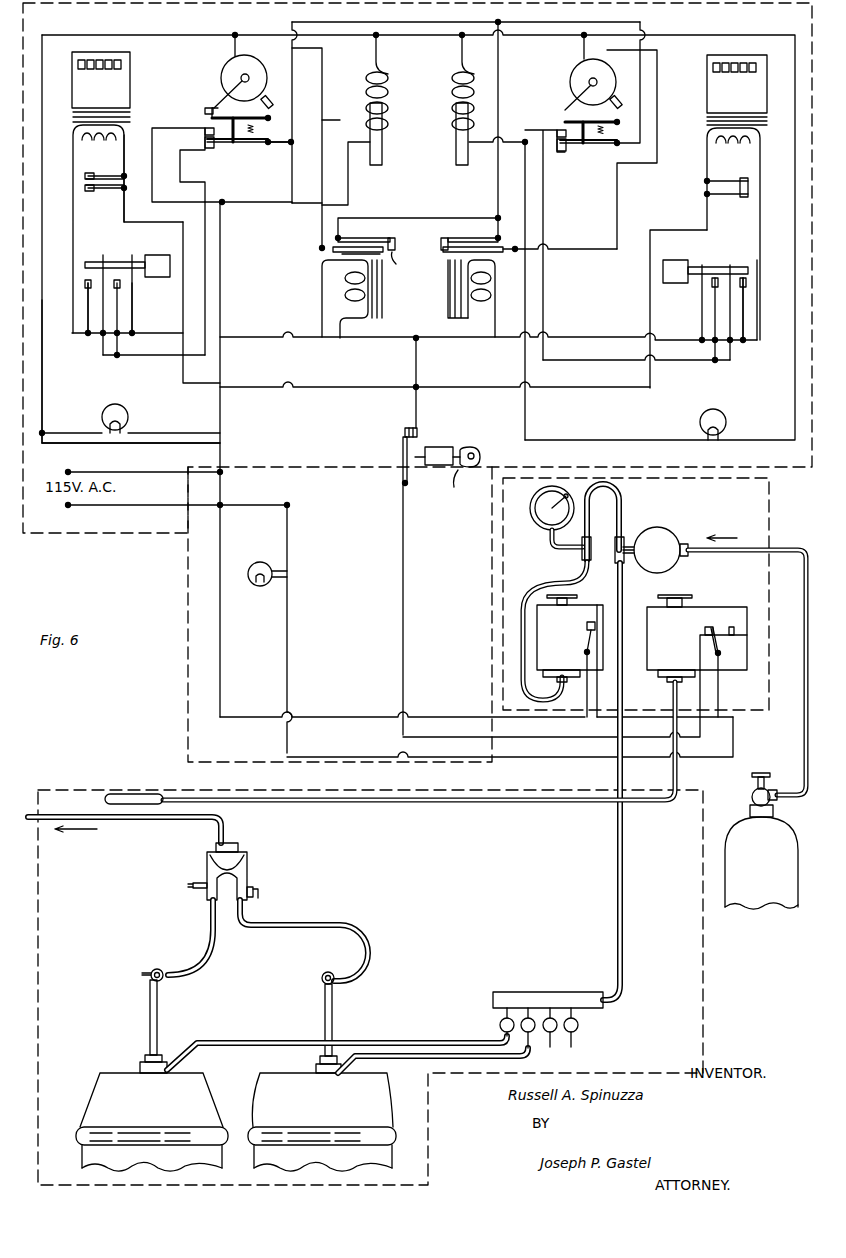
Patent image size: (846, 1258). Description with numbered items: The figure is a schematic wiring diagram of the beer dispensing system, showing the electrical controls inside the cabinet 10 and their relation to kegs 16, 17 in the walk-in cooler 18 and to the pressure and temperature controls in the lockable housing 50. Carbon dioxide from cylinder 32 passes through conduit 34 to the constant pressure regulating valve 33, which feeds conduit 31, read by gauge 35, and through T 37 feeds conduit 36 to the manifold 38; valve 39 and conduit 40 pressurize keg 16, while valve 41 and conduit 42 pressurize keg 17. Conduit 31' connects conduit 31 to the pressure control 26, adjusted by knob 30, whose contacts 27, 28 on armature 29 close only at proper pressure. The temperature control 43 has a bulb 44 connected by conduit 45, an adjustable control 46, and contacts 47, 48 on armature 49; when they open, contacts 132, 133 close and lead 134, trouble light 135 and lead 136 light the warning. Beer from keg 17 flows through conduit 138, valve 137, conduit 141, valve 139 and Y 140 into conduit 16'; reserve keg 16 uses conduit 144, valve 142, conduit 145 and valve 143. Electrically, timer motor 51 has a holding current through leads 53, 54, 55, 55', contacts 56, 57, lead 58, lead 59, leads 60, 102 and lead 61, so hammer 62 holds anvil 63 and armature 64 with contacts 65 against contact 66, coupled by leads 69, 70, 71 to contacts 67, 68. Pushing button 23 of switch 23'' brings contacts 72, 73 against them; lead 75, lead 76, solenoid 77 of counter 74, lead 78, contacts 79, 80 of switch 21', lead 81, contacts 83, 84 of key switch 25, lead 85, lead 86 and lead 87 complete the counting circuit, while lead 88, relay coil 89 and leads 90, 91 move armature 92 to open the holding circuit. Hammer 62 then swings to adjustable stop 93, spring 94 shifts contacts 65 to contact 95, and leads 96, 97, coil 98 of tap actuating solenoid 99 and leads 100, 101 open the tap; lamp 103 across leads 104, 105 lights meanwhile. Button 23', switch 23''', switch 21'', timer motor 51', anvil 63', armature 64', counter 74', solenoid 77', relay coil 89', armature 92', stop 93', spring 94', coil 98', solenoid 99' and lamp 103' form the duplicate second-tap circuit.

The cabinet 10 is at (100, 537).
The beer keg 16 is at (135, 1117).
The conduit 16' is at (124, 835).
The beer keg 17 is at (256, 1076).
The walk-in cooler 18 is at (714, 978).
The switch 21' is at (105, 202).
The switch 21'' is at (727, 200).
The actuating button 23 is at (150, 281).
The actuating button 23' is at (650, 309).
The normally open switch 23'' is at (120, 281).
The normally open switch 23''' is at (725, 287).
The key operated switch 25 is at (447, 475).
The pressure control 26 is at (537, 640).
The switch contact 27 is at (613, 603).
The switch contact 28 is at (585, 622).
The armature 29 is at (585, 652).
The knob 30 is at (552, 580).
The conduit 31 is at (618, 522).
The conduit 31' is at (491, 598).
The carbon dioxide cylinder 32 is at (770, 906).
The constant pressure regulating valve 33 is at (665, 527).
The conduit 34 is at (718, 553).
The gauge 35 is at (530, 526).
The conduit 36 is at (623, 686).
The T 37 is at (630, 566).
The carbon dioxide manifold 38 is at (568, 990).
The valve 39 is at (492, 1020).
The conduit 40 is at (395, 1038).
The valve 41 is at (545, 1040).
The conduit 42 is at (390, 1060).
The temperature control 43 is at (735, 674).
The temperature sensitive bulb 44 is at (125, 790).
The conduit 45 is at (503, 806).
The adjustable control 46 is at (690, 588).
The contact 47 is at (703, 627).
The contact 48 is at (714, 624).
The armature 49 is at (720, 638).
The housing 50 is at (745, 727).
The timer motor 51 is at (226, 76).
The timer motor 51' is at (597, 147).
The lead 53 is at (292, 238).
The lead 54 is at (640, 22).
The lead 55 is at (474, 206).
The lead 55' is at (415, 227).
The switch contact 56 is at (392, 236).
The switch contact 57 is at (160, 503).
The lead 58 is at (328, 116).
The lead 59 is at (233, 44).
The lead 60 is at (42, 382).
The lead 61 is at (170, 470).
The hammer 62 is at (217, 98).
The movable anvil 63 is at (241, 109).
The movable anvil 63' is at (592, 121).
The switch armature 64 is at (250, 152).
The switch armature 64' is at (588, 148).
The contacts 65 is at (204, 138).
The contact 66 is at (210, 148).
The contact 67 is at (125, 293).
The contact 68 is at (95, 263).
The lead 69 is at (206, 186).
The lead 70 is at (125, 343).
The lead 71 is at (110, 355).
The contact 72 is at (135, 284).
The contact 73 is at (86, 288).
The counter 74 is at (116, 87).
The counter 74' is at (725, 86).
The lead 75 is at (280, 144).
The lead 76 is at (73, 229).
The solenoid 77 is at (128, 229).
The solenoid 77' is at (733, 234).
The lead 78 is at (125, 158).
The contact 79 is at (106, 167).
The contact 80 is at (88, 192).
The lead 81 is at (178, 296).
The contact 83 is at (420, 428).
The contact 84 is at (402, 430).
The lead 85 is at (400, 592).
The lead 86 is at (655, 718).
The lead 87 is at (405, 402).
The lead 88 is at (240, 345).
The relay coil 89 is at (347, 288).
The relay coil 89' is at (493, 282).
The lead 90 is at (352, 341).
The lead 91 is at (418, 370).
The armature 92 is at (340, 292).
The armature 92' is at (458, 298).
The adjustable stop 93 is at (274, 93).
The adjustable stop 93' is at (626, 93).
The spring 94 is at (256, 130).
The spring 94' is at (620, 130).
The contact 95 is at (206, 118).
The lead 96 is at (150, 194).
The lead 97 is at (283, 201).
The coil 98 is at (360, 85).
The coil 98' is at (447, 86).
The tap actuating solenoid 99 is at (389, 103).
The tap actuating solenoid 99' is at (470, 133).
The lead 100 is at (368, 42).
The lead 101 is at (275, 23).
The lead 102 is at (222, 442).
The lamp 103 is at (128, 406).
The lamp 103' is at (735, 414).
The lead 104 is at (80, 433).
The lead 105 is at (220, 409).
The contact 132 is at (733, 624).
The contact 133 is at (740, 618).
The lead 134 is at (290, 528).
The trouble light 135 is at (250, 586).
The lead 136 is at (512, 762).
The valve 137 is at (320, 976).
The beer conduit 138 is at (322, 1013).
The valve 139 is at (258, 884).
The Y 140 is at (240, 856).
The conduit 141 is at (275, 930).
The valve 142 is at (152, 966).
The valve 143 is at (188, 884).
The conduit 144 is at (148, 1020).
The conduit 145 is at (200, 953).